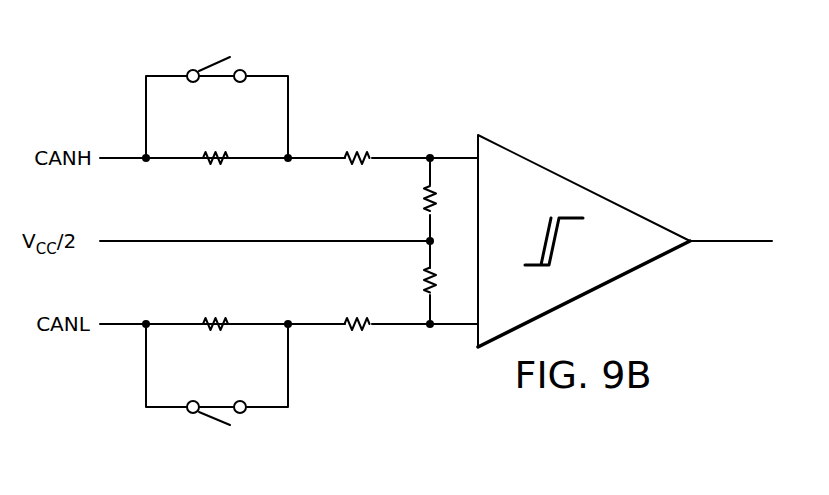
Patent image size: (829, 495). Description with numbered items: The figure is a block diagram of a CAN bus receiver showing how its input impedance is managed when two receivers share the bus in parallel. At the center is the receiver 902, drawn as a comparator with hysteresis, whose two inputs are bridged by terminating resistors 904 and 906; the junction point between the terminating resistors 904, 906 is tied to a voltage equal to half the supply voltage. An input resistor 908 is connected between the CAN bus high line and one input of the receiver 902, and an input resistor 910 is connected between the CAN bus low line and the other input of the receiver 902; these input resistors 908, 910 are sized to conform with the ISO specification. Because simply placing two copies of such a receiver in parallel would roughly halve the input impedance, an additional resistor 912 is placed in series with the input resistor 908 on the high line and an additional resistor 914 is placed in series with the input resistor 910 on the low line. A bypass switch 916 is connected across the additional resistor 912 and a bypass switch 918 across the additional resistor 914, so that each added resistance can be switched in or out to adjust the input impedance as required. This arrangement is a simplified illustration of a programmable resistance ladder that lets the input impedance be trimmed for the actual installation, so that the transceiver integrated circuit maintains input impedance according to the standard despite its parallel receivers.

The receiver 902 is at (585, 187).
The terminating resistor 904 is at (425, 193).
The terminating resistor 906 is at (425, 287).
The input resistor 908 is at (357, 152).
The input resistor 910 is at (350, 330).
The additional resistor 912 is at (213, 151).
The additional resistor 914 is at (211, 331).
The bypass switch 916 is at (215, 65).
The bypass switch 918 is at (217, 418).